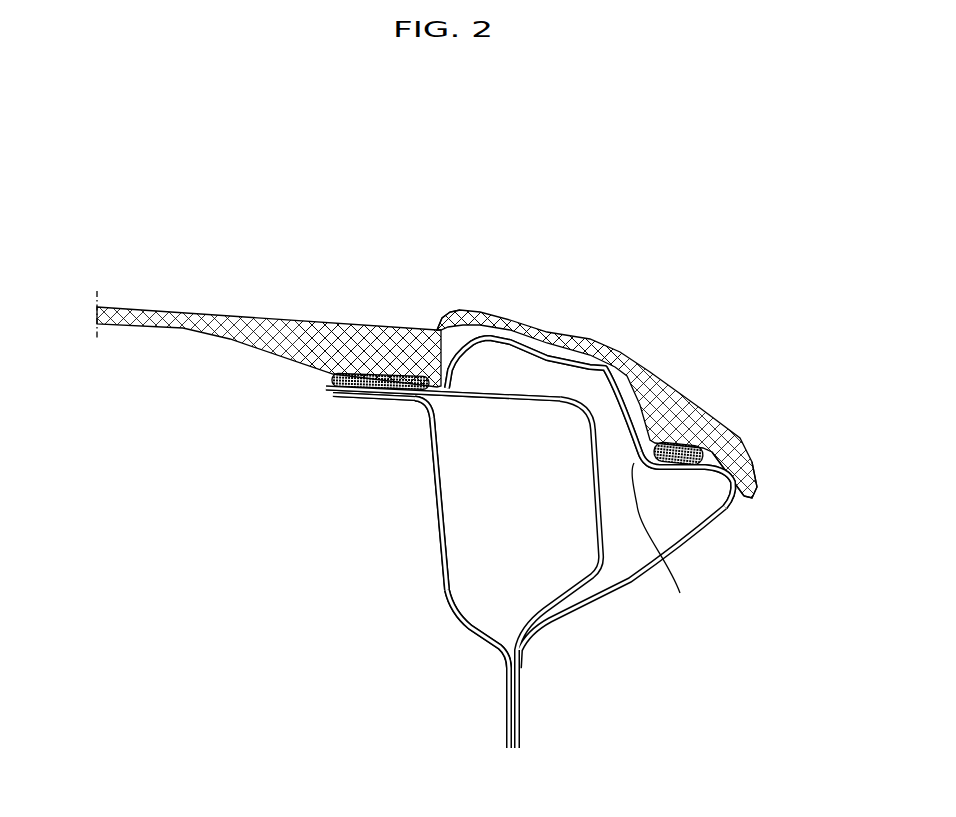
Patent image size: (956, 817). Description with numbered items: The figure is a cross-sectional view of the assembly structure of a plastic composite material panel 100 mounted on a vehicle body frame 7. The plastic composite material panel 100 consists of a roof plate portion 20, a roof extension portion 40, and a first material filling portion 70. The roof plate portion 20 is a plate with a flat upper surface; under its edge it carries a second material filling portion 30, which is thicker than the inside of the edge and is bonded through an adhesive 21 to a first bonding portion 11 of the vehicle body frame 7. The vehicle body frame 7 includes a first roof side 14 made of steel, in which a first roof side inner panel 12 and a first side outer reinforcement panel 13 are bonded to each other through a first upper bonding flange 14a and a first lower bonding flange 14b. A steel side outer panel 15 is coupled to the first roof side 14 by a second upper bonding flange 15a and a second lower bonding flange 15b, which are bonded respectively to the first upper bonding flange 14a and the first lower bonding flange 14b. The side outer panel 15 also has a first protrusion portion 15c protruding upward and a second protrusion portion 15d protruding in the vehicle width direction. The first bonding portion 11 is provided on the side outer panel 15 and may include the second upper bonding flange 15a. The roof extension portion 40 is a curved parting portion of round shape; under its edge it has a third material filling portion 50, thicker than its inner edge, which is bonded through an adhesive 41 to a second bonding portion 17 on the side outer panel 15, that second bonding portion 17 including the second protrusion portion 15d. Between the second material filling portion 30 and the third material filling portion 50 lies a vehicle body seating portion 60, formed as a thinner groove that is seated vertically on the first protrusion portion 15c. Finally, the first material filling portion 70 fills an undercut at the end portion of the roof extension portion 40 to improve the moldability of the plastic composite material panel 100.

The plastic composite material panel 100 is at (478, 164).
The vehicle body frame 7 is at (466, 635).
The first bonding portion 11 is at (433, 384).
The first roof side inner panel 12 is at (445, 573).
The first side outer reinforcement panel 13 is at (593, 498).
The first roof side 14 is at (372, 515).
The first upper bonding flange 14a is at (389, 395).
The first lower bonding flange 14b is at (510, 730).
The side outer panel 15 is at (620, 597).
The second upper bonding flange 15a is at (327, 388).
The second lower bonding flange 15b is at (520, 723).
The first protrusion portion 15c is at (548, 356).
The second protrusion portion 15d is at (692, 468).
The second bonding portion 17 is at (711, 454).
The roof plate portion 20 is at (288, 311).
The adhesive 21 is at (329, 377).
The second material filling portion 30 is at (369, 350).
The roof extension portion 40 is at (651, 360).
The adhesive 41 is at (663, 542).
The third material filling portion 50 is at (682, 424).
The vehicle body seating portion 60 is at (594, 356).
The first material filling portion 70 is at (748, 503).